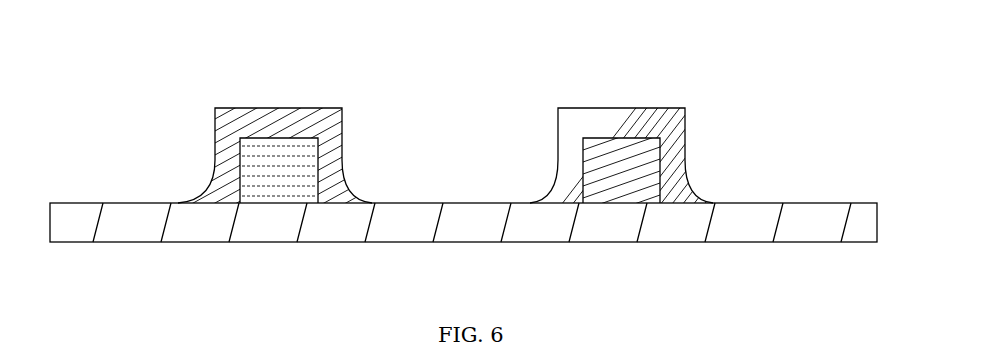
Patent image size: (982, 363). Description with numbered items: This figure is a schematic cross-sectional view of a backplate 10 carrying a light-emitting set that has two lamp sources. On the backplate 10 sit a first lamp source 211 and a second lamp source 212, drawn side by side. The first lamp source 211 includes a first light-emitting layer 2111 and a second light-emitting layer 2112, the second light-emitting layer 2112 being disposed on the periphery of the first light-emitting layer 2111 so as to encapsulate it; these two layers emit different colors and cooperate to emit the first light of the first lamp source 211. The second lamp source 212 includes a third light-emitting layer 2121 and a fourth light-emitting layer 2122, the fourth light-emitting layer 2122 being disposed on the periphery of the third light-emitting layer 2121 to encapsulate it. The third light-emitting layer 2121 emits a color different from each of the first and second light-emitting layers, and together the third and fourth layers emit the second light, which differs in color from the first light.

The backplate 10 is at (135, 223).
The first lamp source 211 is at (289, 158).
The first light-emitting layer 2111 is at (313, 178).
The second light-emitting layer 2112 is at (303, 128).
The second lamp source 212 is at (603, 183).
The third light-emitting layer 2121 is at (655, 175).
The fourth light-emitting layer 2122 is at (632, 118).